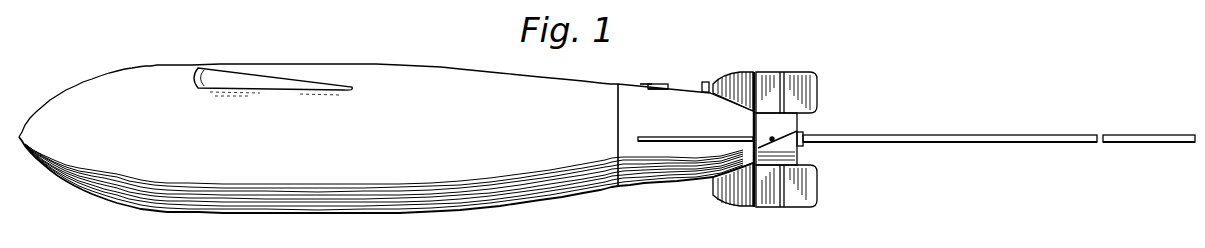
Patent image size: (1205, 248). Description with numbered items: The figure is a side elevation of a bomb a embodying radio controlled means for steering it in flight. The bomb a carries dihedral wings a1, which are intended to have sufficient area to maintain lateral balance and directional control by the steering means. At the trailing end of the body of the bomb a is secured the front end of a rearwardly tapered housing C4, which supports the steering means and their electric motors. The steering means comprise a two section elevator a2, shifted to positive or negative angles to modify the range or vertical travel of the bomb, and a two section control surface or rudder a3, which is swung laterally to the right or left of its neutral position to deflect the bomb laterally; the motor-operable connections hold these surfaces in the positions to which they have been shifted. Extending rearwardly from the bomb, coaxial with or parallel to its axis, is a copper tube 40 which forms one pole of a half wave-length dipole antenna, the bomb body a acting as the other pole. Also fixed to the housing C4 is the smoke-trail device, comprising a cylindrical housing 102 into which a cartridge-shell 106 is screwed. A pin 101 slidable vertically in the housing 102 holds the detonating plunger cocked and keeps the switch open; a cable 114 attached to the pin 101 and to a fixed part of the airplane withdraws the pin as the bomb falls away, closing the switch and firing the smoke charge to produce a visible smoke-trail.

The bomb a is at (386, 154).
The dihedral wings a1 is at (277, 84).
The two section elevator a2 is at (797, 131).
The two section control surface or rudder a3 is at (820, 96).
The copper tube 40 is at (1050, 132).
The pin 101 is at (660, 84).
The cylindrical housing 102 is at (664, 90).
The cartridge-shell 106 is at (701, 84).
The cable 114 is at (649, 83).
The rearwardly tapered housing C4 is at (695, 129).